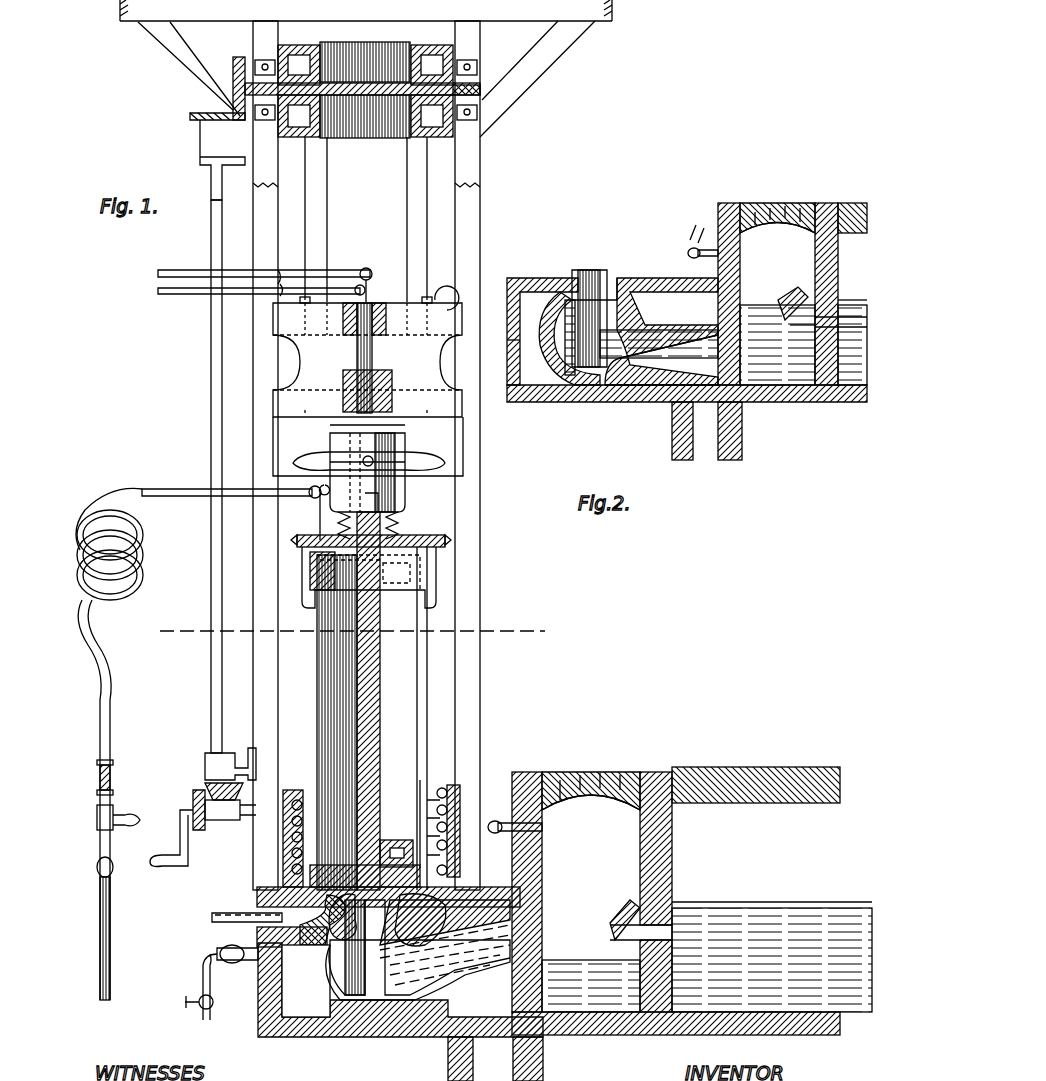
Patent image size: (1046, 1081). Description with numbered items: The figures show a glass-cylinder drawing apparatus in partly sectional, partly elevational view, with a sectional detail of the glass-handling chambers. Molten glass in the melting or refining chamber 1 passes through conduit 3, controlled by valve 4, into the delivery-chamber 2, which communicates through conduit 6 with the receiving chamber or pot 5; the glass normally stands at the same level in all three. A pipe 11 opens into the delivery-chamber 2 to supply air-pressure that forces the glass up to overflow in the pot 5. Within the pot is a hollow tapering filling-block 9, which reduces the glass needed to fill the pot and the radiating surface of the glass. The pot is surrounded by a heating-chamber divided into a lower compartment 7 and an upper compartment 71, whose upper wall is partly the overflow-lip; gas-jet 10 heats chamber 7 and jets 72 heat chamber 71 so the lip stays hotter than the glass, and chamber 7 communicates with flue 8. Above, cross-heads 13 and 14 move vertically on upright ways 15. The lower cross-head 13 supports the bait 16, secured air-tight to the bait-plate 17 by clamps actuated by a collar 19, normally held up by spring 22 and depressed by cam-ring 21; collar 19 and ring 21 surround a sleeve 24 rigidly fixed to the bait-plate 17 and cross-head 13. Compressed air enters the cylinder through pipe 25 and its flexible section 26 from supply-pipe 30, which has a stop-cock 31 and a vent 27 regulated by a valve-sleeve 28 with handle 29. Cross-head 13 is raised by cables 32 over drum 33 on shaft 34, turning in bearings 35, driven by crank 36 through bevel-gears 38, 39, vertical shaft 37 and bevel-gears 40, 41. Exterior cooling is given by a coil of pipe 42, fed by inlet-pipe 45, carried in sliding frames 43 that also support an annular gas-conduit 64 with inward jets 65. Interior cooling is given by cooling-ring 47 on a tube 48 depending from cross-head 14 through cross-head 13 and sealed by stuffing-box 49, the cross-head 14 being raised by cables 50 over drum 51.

In FIG. 1, the melting or refining chamber 1 is at (692, 901).
In FIG. 2, the melting or refining chamber 1 is at (803, 315).
In FIG. 1, the delivery-chamber 2 is at (592, 892).
In FIG. 2, the delivery-chamber 2 is at (792, 294).
In FIG. 1, the conduit 3 is at (660, 932).
In FIG. 2, the conduit 3 is at (828, 326).
In FIG. 1, the valve 4 is at (622, 910).
In FIG. 2, the valve 4 is at (780, 310).
In FIG. 1, the receiving chamber or pot 5 is at (418, 947).
In FIG. 2, the receiving chamber or pot 5 is at (578, 331).
In FIG. 2, the conduit 6 is at (700, 340).
In FIG. 1, the heating-chamber 7 is at (400, 990).
In FIG. 2, the heating-chamber 7 is at (687, 340).
In FIG. 1, the flue 8 is at (495, 1059).
In FIG. 2, the flue 8 is at (707, 431).
In FIG. 1, the filling-block 9 is at (346, 633).
In FIG. 2, the filling-block 9 is at (595, 275).
In FIG. 1, the gas-jet 10 is at (246, 965).
In FIG. 1, the pipe 11 is at (515, 827).
In FIG. 2, the pipe 11 is at (703, 238).
In FIG. 1, the cross-head 13 is at (368, 446).
In FIG. 1, the cross-head 14 is at (367, 351).
In FIG. 1, the upright ways 15 is at (254, 678).
In FIG. 1, the bait 16 is at (436, 575).
In FIG. 1, the bait-plate 17 is at (445, 538).
In FIG. 1, the collar or sleeve 19 is at (405, 487).
In FIG. 1, the cam-ring 21 is at (420, 472).
In FIG. 1, the spring 22 is at (390, 518).
In FIG. 1, the sleeve 24 is at (320, 512).
In FIG. 1, the pipe 25 is at (188, 490).
In FIG. 1, the flexible section 26 is at (133, 590).
In FIG. 1, the vent 27 is at (112, 783).
In FIG. 1, the valve-sleeve 28 is at (97, 778).
In FIG. 1, the handle 29 is at (124, 824).
In FIG. 1, the supply-pipe 30 is at (111, 942).
In FIG. 1, the stop-cock 31 is at (100, 872).
In FIG. 1, the ropes or cables 32 is at (305, 225).
In FIG. 1, the drum 33 is at (362, 78).
In FIG. 1, the shaft 34 is at (478, 85).
In FIG. 1, the bearings 35 is at (255, 72).
In FIG. 1, the crank 36 is at (168, 866).
In FIG. 1, the vertical shaft 37 is at (210, 696).
In FIG. 1, the bevel-gear 38 is at (192, 790).
In FIG. 1, the bevel-gear 39 is at (205, 765).
In FIG. 1, the bevel-gear 40 is at (200, 122).
In FIG. 1, the bevel-gear 41 is at (233, 85).
In FIG. 1, the coil of pipe 42 is at (308, 795).
In FIG. 1, the sliding frames 43 is at (285, 850).
In FIG. 1, the inlet-pipe 45 is at (447, 787).
In FIG. 1, the cooling ring or chamber 47 is at (414, 840).
In FIG. 1, the tube 48 is at (388, 755).
In FIG. 1, the stuffing-box 49 is at (390, 392).
In FIG. 1, the cables or ropes 50 is at (330, 245).
In FIG. 1, the drum 51 is at (378, 140).
In FIG. 1, the ring or annular gas-conduit 64 is at (283, 878).
In FIG. 1, the jets 65 is at (425, 815).
In FIG. 1, the upper compartment 71 is at (405, 1045).
In FIG. 1, the jets 72 is at (212, 918).